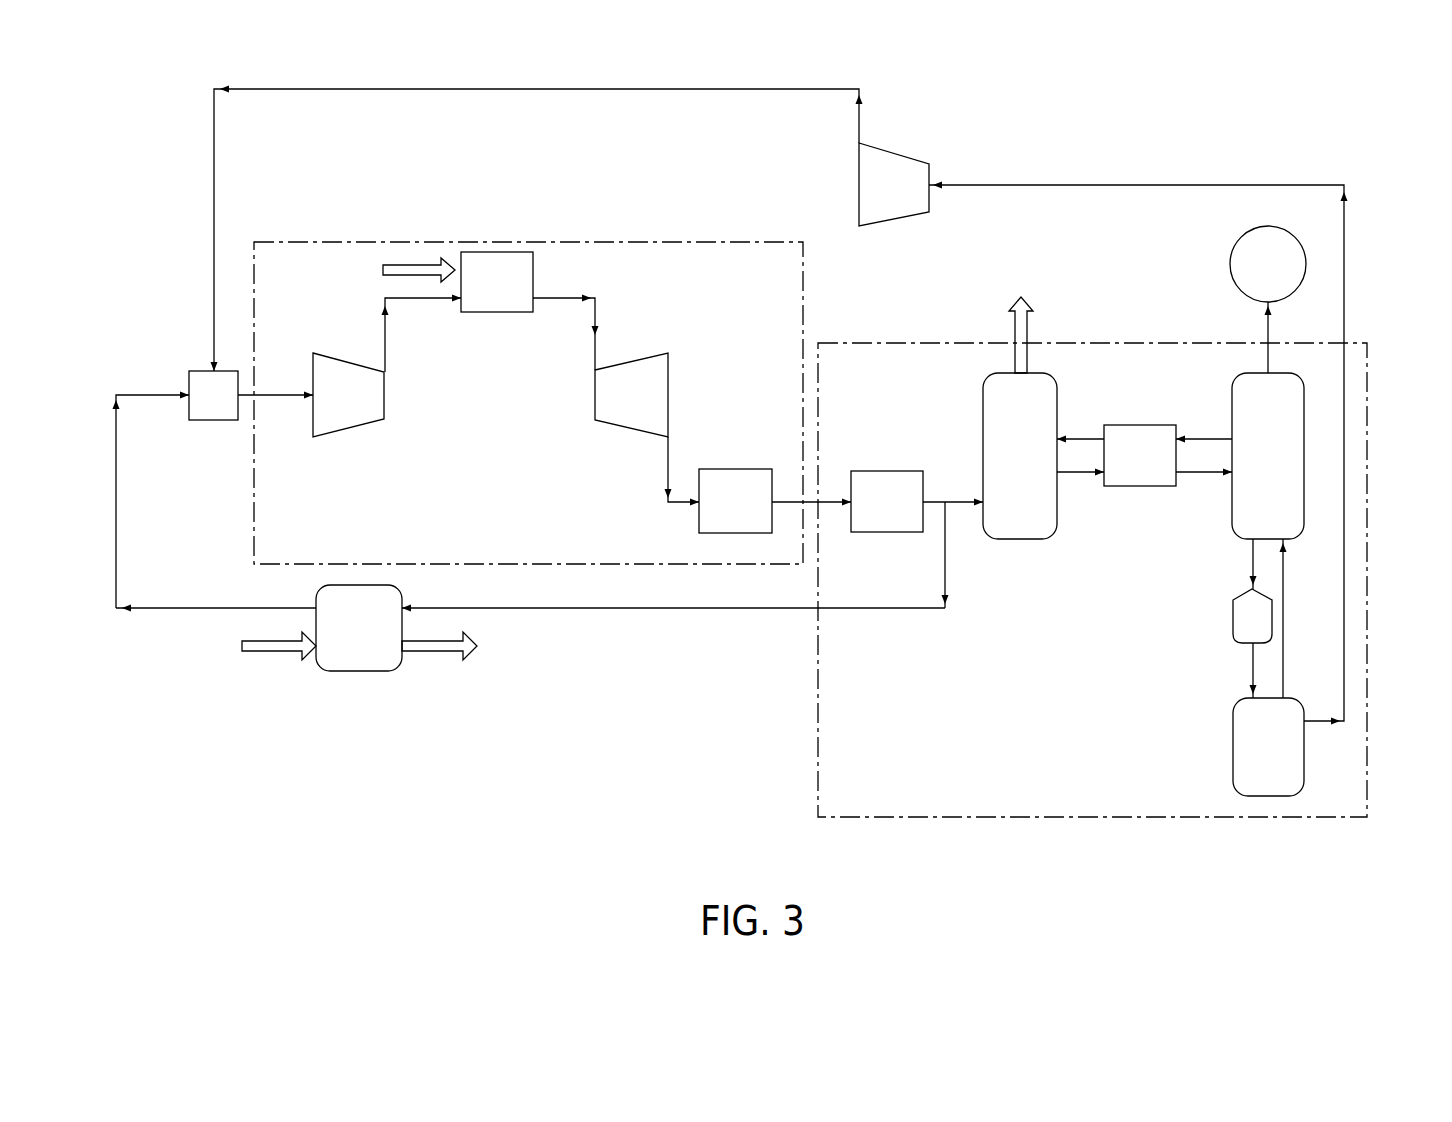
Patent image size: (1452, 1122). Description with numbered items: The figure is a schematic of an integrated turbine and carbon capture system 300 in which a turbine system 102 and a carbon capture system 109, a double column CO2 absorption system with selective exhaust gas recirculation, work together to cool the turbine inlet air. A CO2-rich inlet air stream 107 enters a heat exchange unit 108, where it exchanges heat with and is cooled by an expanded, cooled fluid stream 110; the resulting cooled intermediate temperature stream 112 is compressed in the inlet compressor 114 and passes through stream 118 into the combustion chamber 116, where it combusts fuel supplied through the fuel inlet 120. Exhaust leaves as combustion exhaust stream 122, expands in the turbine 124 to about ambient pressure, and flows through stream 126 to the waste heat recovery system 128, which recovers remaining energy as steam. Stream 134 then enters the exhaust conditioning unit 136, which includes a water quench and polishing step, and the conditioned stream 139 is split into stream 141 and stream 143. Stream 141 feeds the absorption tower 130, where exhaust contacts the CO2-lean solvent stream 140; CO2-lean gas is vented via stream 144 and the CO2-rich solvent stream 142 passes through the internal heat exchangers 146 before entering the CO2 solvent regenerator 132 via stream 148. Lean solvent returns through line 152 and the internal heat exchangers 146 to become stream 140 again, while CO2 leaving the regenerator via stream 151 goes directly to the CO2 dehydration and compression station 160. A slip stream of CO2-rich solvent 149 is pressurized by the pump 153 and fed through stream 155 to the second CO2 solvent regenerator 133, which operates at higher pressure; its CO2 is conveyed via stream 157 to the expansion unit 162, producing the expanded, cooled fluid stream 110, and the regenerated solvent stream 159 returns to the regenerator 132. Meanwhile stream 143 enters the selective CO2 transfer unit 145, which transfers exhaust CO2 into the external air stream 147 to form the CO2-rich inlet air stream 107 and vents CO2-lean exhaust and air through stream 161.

The integrated turbine and carbon capture system 300 is at (1232, 95).
The turbine system 102 is at (355, 242).
The carbon capture system 109 is at (915, 342).
The CO2-rich inlet air stream 107 is at (158, 392).
The heat exchange unit 108 is at (215, 422).
The expanded, cooled fluid stream 110 is at (214, 133).
The cooled intermediate temperature stream 112 is at (275, 398).
The inlet compressor 114 is at (372, 413).
The combustion chamber 116 is at (521, 299).
The compressed air stream 118 is at (425, 300).
The fuel inlet 120 is at (380, 270).
The combustion exhaust stream 122 is at (562, 300).
The turbine 124 is at (655, 412).
The low pressure exhaust stream 126 is at (668, 462).
The waste heat recovery system 128 is at (759, 518).
The absorption tower 130 is at (1044, 467).
The CO2 solvent regenerator 132 is at (1292, 467).
The second CO2 solvent regenerator 133 is at (1292, 757).
The exhaust stream 134 is at (788, 497).
The exhaust conditioning unit 136 is at (911, 518).
The conditioned exhaust stream 139 is at (935, 497).
The CO2-lean solvent stream 140 is at (1088, 437).
The absorber feed stream 141 is at (958, 504).
The CO2-rich solvent stream 142 is at (1075, 474).
The recirculation exhaust stream 143 is at (617, 613).
The CO2-lean exhaust vent stream 144 is at (1030, 302).
The selective CO2 transfer unit 145 is at (383, 643).
The internal heat exchangers 146 is at (1164, 473).
The external air stream 147 is at (252, 655).
The heated CO2-rich solvent stream 148 is at (1205, 474).
The CO2-rich solvent slip stream 149 is at (1245, 562).
The CO2 stream 151 is at (1262, 315).
The heated CO2-lean solvent line 152 is at (1210, 437).
The pump 153 is at (1233, 620).
The second regenerator feed stream 155 is at (1253, 665).
The high pressure CO2 stream 157 is at (1344, 692).
The regenerated solvent stream 159 is at (1283, 658).
The CO2 dehydration and compression station 160 is at (1292, 279).
The CO2-lean exhaust and air vent stream 161 is at (450, 655).
The expansion unit 162 is at (918, 201).